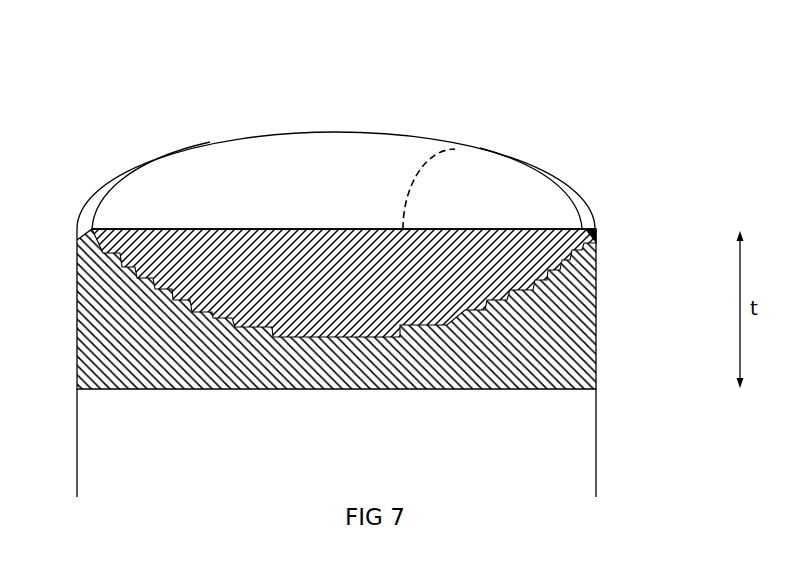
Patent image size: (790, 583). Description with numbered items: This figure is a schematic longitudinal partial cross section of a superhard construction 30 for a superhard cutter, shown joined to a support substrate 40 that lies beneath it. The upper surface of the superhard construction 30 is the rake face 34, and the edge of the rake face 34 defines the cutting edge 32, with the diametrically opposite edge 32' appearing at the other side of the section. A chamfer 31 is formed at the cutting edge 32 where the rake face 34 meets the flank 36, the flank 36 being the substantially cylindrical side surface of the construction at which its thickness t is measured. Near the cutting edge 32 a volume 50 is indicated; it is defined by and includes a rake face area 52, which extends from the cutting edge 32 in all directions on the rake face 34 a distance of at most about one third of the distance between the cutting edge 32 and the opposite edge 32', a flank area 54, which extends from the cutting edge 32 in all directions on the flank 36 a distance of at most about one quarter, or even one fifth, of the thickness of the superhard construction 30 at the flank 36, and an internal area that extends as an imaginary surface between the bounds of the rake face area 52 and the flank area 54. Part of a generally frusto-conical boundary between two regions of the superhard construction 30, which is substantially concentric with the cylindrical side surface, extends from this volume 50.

The superhard construction 30 is at (184, 94).
The chamfer 31 is at (594, 230).
The cutting edge 32 is at (571, 179).
The diametrically opposite edge 32' is at (111, 177).
The rake face 34 is at (535, 115).
The flank 36 is at (626, 318).
The support substrate 40 is at (597, 437).
The volume 50 is at (543, 230).
The rake face area 52 is at (483, 203).
The flank area 54 is at (597, 253).